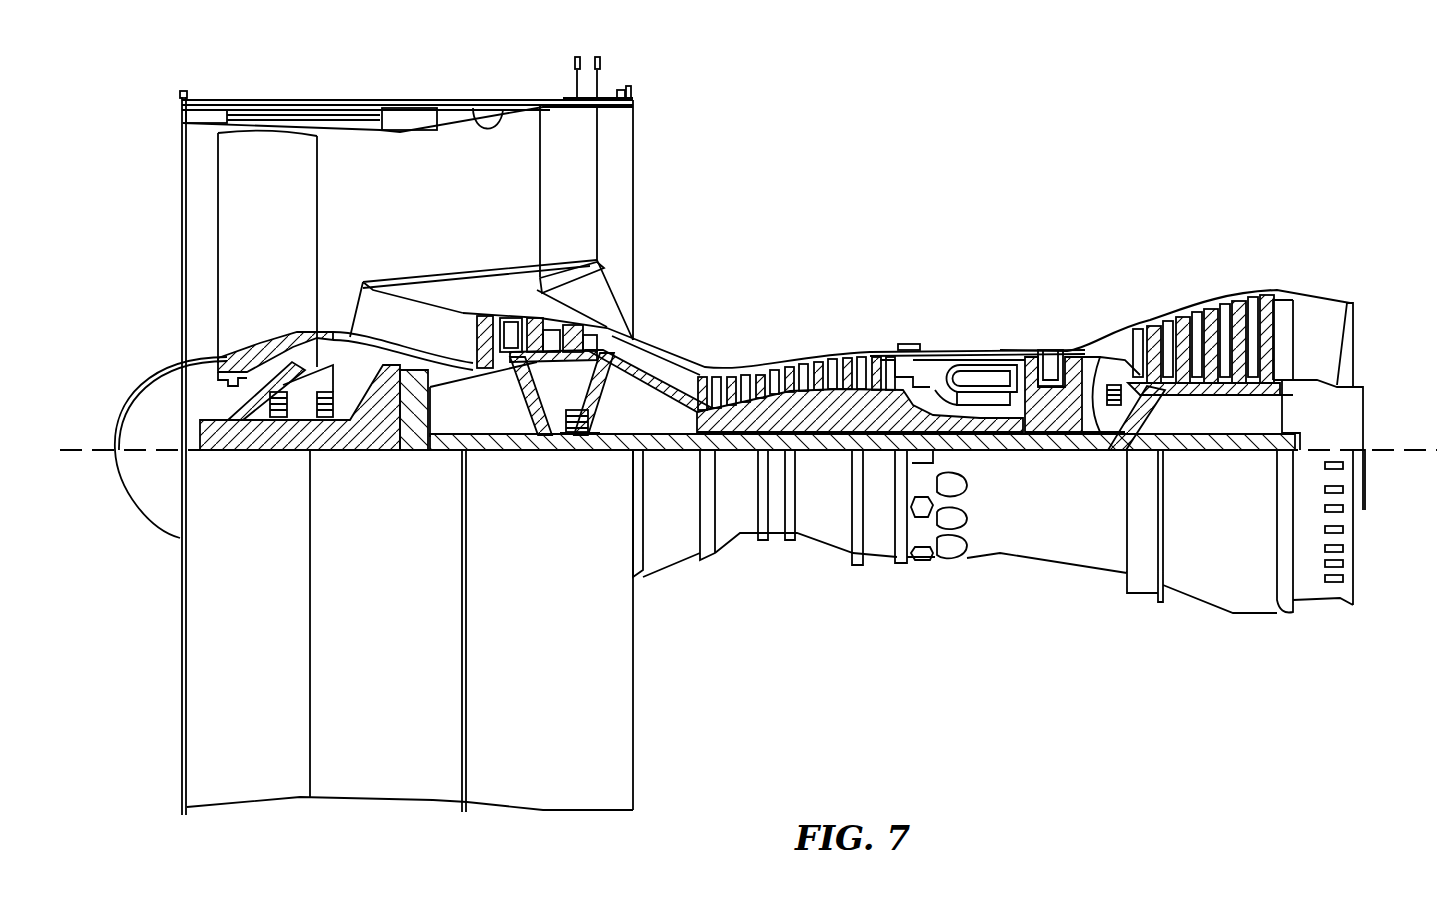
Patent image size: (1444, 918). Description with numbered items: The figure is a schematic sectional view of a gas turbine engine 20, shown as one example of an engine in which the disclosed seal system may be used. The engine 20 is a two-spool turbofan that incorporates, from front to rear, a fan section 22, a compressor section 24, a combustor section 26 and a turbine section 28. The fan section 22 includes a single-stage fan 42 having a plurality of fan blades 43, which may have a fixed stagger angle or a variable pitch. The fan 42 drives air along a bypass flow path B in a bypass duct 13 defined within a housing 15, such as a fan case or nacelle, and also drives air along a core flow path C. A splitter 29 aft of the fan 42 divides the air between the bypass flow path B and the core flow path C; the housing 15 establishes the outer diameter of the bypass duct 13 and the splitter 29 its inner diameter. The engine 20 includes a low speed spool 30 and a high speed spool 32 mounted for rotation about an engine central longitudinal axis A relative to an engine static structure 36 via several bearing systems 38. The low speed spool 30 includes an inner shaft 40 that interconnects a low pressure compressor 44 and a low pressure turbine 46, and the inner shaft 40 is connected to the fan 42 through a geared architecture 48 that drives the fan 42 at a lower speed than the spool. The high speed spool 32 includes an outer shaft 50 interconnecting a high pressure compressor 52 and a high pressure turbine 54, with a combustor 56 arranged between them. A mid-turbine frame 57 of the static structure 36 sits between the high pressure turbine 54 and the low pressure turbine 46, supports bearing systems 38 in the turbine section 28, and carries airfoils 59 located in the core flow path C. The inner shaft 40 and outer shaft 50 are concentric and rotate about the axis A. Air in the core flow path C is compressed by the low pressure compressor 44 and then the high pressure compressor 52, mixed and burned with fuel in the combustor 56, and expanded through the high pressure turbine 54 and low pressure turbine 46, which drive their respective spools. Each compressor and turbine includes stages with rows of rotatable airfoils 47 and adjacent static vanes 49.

The bypass duct 13 is at (492, 125).
The housing 15 is at (413, 104).
The gas turbine engine 20 is at (1026, 195).
The fan section 22 is at (327, 91).
The compressor section 24 is at (685, 348).
The combustor section 26 is at (958, 332).
The turbine section 28 is at (1153, 285).
The splitter 29 is at (375, 281).
The low speed spool 30 is at (838, 452).
The high speed spool 32 is at (883, 396).
The engine static structure 36 is at (880, 563).
The bearing systems 38 is at (578, 430).
The inner shaft 40 is at (650, 452).
The fan 42 is at (275, 238).
The fan blades 43 is at (305, 252).
The low pressure compressor 44 is at (531, 330).
The low pressure turbine 46 is at (1207, 315).
The rotatable airfoils 47 is at (489, 330).
The geared architecture 48 is at (413, 432).
The static vanes 49 is at (508, 330).
The outer shaft 50 is at (994, 442).
The high pressure compressor 52 is at (805, 370).
The high pressure turbine 54 is at (1050, 350).
The combustor 56 is at (975, 373).
The mid-turbine frame 57 is at (1103, 365).
The airfoils 59 is at (1146, 396).
The engine central longitudinal axis A is at (1424, 447).
The bypass flow path B is at (360, 173).
The core flow path C is at (402, 319).